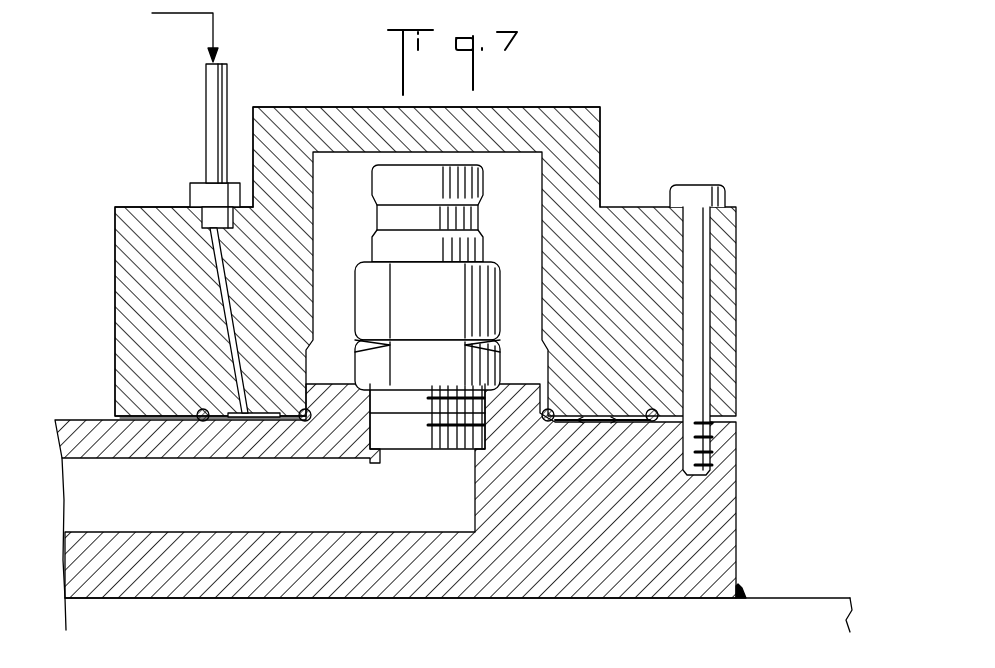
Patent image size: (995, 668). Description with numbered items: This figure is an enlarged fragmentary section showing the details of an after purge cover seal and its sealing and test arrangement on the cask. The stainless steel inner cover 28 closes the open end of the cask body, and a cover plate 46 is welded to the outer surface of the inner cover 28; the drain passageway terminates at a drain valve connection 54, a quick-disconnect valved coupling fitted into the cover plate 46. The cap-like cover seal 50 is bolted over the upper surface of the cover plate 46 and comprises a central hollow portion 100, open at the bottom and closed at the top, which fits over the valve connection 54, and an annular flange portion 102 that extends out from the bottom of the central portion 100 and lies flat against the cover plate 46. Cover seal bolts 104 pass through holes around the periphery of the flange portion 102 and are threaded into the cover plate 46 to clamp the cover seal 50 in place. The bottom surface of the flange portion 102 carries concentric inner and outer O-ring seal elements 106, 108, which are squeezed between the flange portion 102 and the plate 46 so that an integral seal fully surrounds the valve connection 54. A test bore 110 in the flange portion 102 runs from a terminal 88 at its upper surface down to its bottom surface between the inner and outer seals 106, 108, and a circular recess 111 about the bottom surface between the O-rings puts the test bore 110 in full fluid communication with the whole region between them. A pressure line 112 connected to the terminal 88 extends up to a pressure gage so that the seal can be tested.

The inner cover 28 is at (786, 606).
The cover plate 46 is at (80, 420).
The cover seal 50 is at (605, 108).
The drain valve connection 54 is at (470, 243).
The terminal 88 is at (202, 190).
The central hollow portion 100 is at (315, 107).
The annular flange portion 102 is at (122, 247).
The cover seal bolt 104 is at (712, 240).
The inner O-ring seal element 106 is at (302, 405).
The outer O-ring seal element 108 is at (200, 408).
The test bore 110 is at (222, 298).
The circular recess 111 is at (250, 420).
The pressure line 112 is at (208, 97).